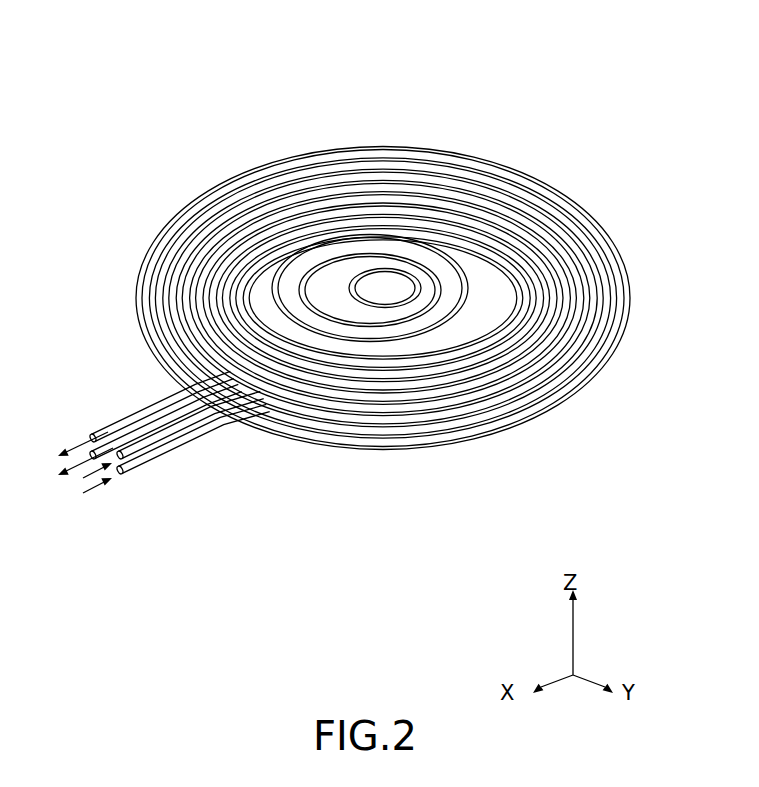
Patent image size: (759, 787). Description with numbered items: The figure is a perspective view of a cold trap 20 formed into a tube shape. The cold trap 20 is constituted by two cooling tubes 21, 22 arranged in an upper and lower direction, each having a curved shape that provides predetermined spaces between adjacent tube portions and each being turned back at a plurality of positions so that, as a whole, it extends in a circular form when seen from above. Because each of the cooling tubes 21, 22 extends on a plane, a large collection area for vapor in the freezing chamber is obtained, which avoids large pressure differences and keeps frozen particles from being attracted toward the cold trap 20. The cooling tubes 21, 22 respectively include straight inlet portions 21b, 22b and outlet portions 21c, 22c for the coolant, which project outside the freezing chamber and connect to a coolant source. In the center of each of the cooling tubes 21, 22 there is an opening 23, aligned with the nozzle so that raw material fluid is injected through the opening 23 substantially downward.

The cold trap 20 is at (391, 88).
The cooling tube 21 is at (512, 166).
The cooling tube 22 is at (621, 358).
The opening 23 is at (378, 290).
The inlet portion 21b is at (200, 417).
The outlet portion 21c is at (155, 402).
The inlet portion 22b is at (165, 445).
The outlet portion 22c is at (128, 437).